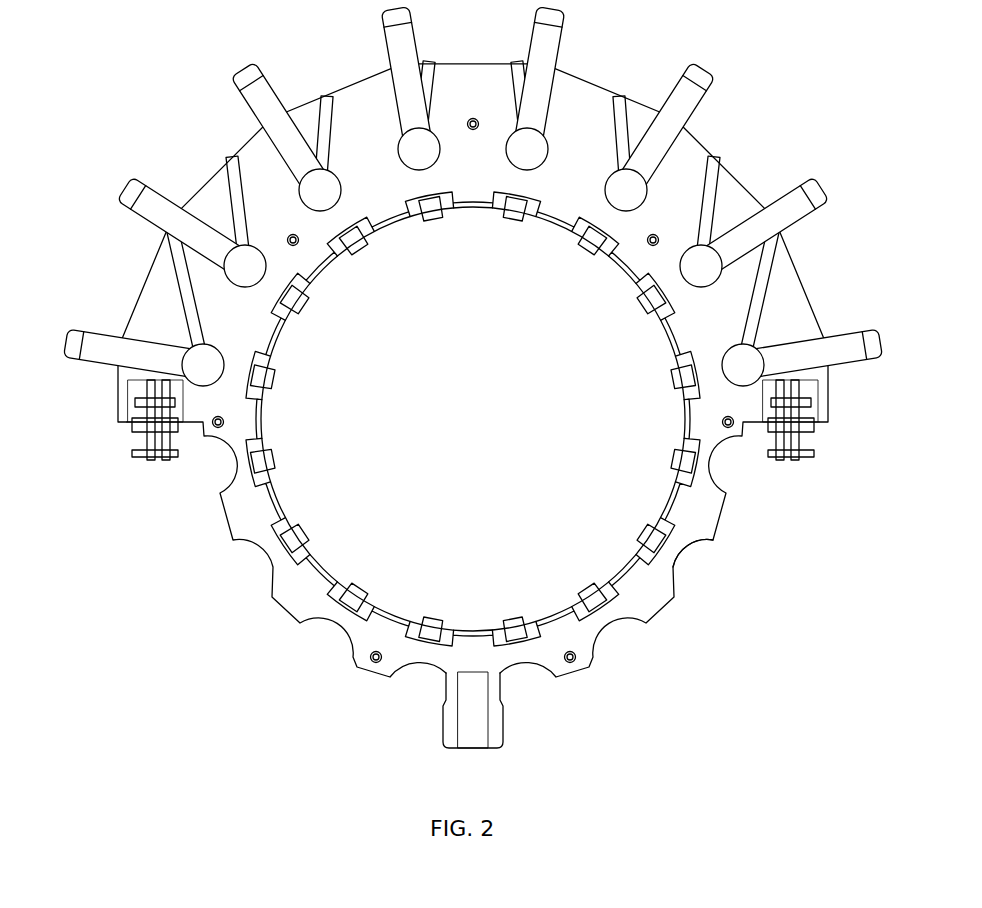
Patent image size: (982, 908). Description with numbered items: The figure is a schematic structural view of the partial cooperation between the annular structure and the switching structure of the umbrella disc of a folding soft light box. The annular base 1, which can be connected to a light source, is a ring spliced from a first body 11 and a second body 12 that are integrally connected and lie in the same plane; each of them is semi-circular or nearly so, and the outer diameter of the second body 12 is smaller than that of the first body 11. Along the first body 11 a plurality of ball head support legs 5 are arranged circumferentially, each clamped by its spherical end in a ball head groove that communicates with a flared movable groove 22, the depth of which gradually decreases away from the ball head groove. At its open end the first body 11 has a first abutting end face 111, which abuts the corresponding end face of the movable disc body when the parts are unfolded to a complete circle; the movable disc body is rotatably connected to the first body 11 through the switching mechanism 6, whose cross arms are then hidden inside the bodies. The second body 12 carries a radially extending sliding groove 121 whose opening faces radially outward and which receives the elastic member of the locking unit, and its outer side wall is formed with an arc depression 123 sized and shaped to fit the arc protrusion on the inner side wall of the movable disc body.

The annular base 1 is at (728, 192).
The ball head support leg 5 is at (688, 100).
The switching mechanism 6 is at (806, 438).
The first body 11 is at (778, 316).
The second body 12 is at (298, 604).
The movable groove 22 is at (213, 190).
The first abutting end face 111 is at (121, 418).
The sliding groove 121 is at (474, 718).
The arc depression 123 is at (684, 562).